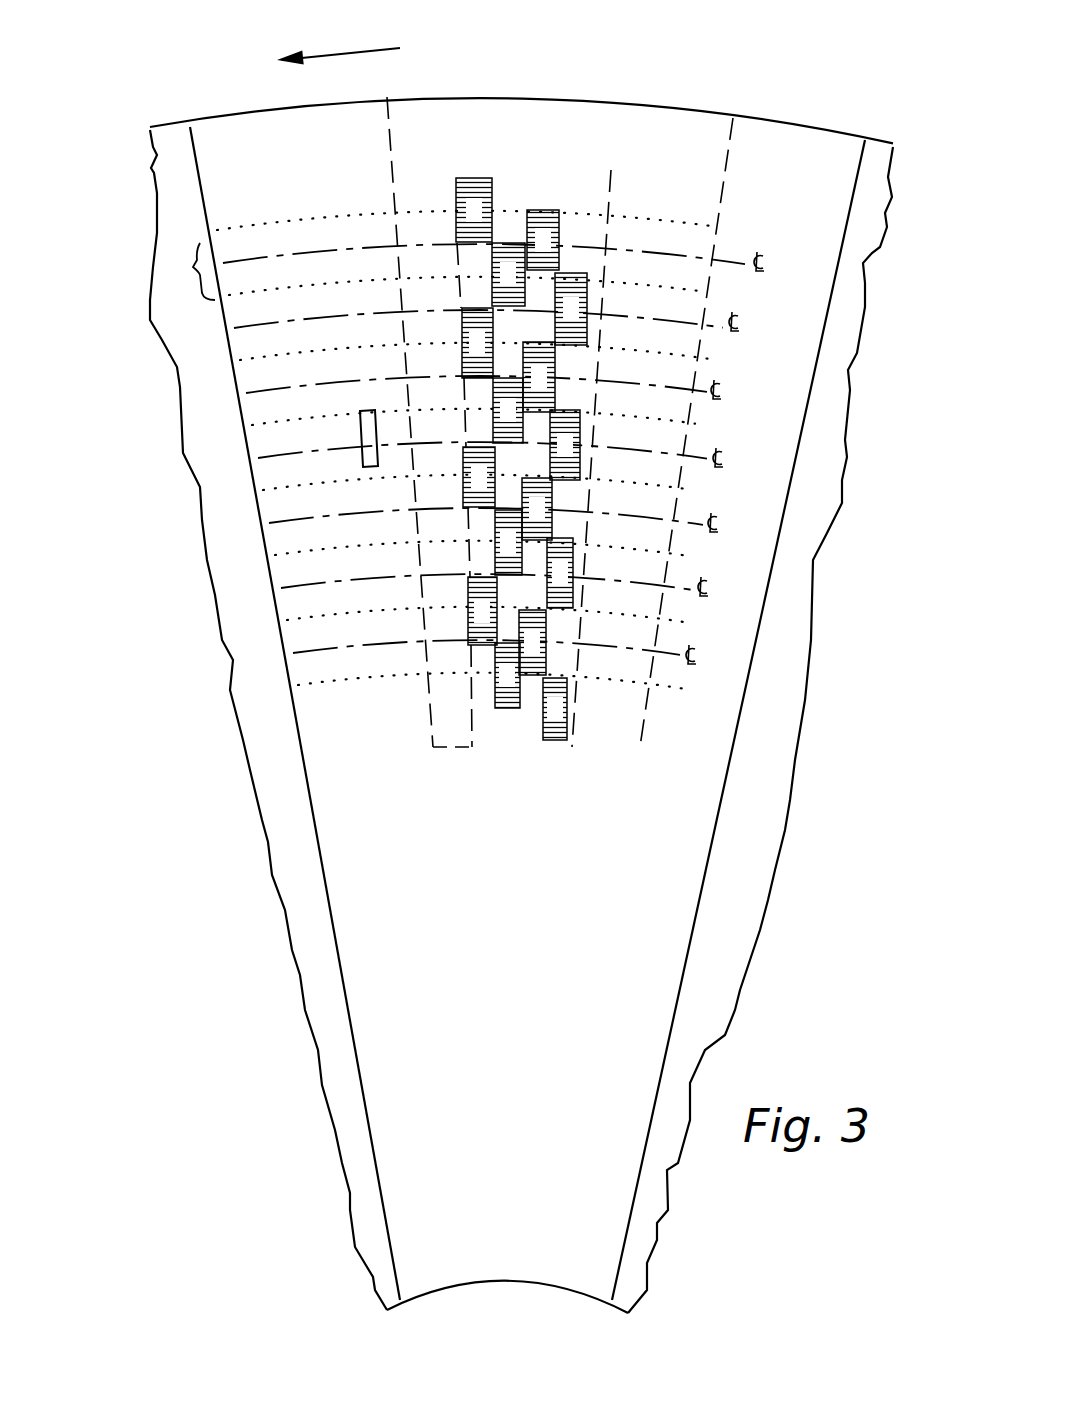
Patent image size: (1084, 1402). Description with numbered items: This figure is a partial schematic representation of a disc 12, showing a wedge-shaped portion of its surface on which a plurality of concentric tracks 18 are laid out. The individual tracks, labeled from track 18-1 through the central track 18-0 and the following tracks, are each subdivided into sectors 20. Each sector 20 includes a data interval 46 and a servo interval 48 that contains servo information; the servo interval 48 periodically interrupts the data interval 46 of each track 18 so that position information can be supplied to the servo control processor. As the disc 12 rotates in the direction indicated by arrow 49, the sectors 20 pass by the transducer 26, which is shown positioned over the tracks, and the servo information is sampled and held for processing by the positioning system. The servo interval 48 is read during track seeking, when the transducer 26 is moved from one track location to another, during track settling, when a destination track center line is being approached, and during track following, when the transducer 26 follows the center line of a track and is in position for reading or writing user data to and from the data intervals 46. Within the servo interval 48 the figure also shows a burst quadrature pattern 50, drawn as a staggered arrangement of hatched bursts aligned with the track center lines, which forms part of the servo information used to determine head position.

The disc 12 is at (772, 115).
The track 18 is at (193, 267).
The track 18-1 is at (780, 328).
The track 18-0 is at (757, 397).
The sector 20 is at (738, 103).
The transducer 26 is at (360, 437).
The data interval 46 is at (722, 212).
The servo interval 48 is at (609, 187).
The arrow 49 is at (330, 48).
The burst quadrature pattern 50 is at (568, 752).